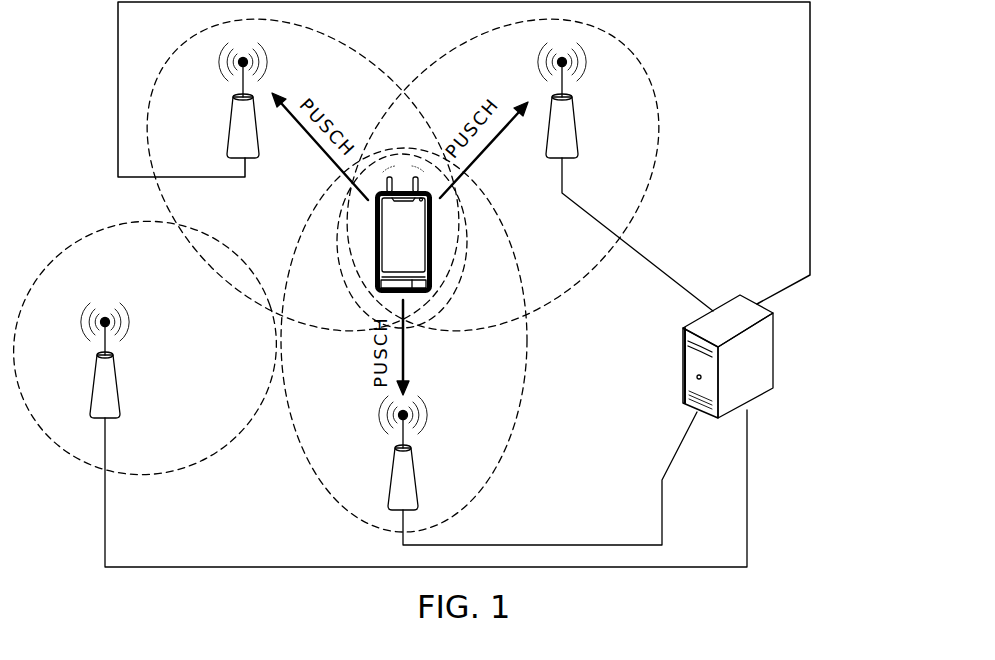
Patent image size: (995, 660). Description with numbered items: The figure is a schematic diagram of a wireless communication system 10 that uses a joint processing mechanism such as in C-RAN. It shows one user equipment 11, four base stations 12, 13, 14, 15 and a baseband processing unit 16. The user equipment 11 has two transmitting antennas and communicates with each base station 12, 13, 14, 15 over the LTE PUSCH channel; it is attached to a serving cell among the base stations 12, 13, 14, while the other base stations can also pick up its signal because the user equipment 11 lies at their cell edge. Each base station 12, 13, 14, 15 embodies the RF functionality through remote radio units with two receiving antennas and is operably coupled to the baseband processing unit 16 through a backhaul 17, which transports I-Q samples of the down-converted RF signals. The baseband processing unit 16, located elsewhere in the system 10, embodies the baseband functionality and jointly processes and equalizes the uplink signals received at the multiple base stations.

The wireless communication system 10 is at (813, 457).
The user equipment 11 is at (438, 250).
The base station 12 is at (194, 136).
The base station 13 is at (586, 136).
The base station 14 is at (426, 488).
The base station 15 is at (56, 396).
The baseband processing unit 16 is at (784, 364).
The backhaul 17 is at (785, 181).